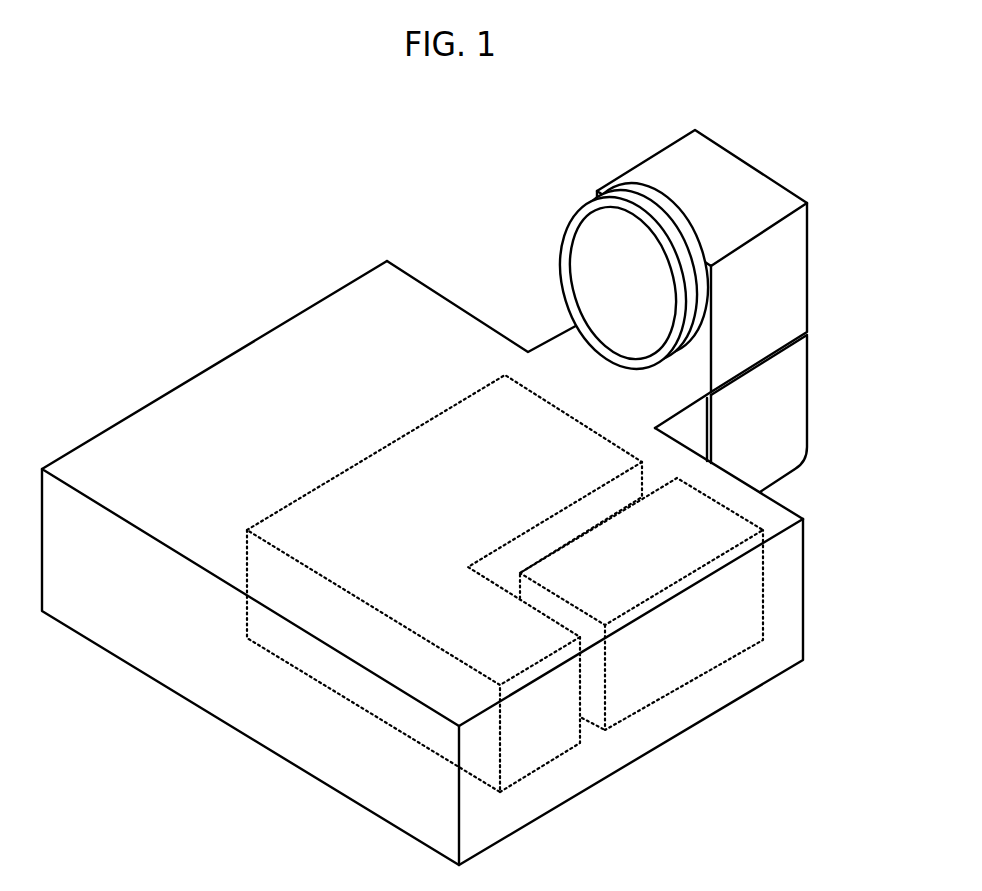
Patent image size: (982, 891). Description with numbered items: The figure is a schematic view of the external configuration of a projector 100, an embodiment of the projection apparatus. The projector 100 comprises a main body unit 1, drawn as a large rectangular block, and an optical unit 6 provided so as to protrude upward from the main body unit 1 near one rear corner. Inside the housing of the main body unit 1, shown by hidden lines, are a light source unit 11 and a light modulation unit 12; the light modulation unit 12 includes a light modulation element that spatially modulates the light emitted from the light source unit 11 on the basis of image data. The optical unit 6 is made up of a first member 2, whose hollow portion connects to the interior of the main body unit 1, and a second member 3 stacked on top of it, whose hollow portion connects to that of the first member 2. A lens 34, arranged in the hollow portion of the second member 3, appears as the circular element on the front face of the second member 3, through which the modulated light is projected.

The projector 100 is at (380, 220).
The main body unit 1 is at (279, 327).
The light modulation unit 12 is at (505, 375).
The light source unit 11 is at (732, 535).
The optical unit 6 is at (811, 249).
The first member 2 is at (807, 373).
The second member 3 is at (808, 277).
The lens 34 is at (597, 263).